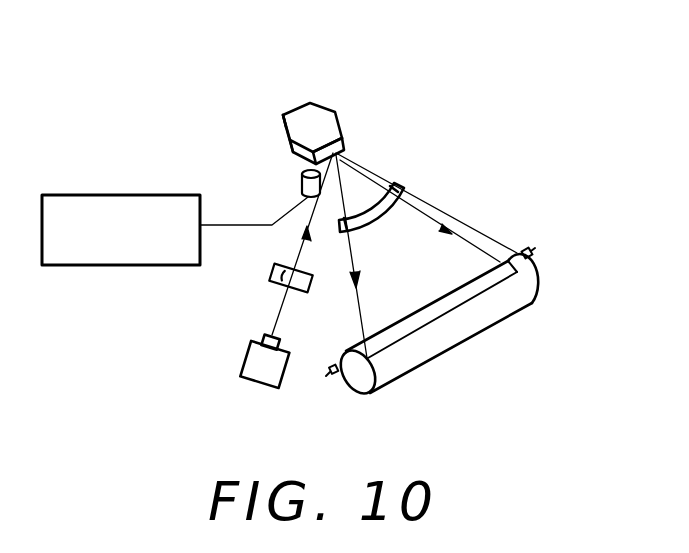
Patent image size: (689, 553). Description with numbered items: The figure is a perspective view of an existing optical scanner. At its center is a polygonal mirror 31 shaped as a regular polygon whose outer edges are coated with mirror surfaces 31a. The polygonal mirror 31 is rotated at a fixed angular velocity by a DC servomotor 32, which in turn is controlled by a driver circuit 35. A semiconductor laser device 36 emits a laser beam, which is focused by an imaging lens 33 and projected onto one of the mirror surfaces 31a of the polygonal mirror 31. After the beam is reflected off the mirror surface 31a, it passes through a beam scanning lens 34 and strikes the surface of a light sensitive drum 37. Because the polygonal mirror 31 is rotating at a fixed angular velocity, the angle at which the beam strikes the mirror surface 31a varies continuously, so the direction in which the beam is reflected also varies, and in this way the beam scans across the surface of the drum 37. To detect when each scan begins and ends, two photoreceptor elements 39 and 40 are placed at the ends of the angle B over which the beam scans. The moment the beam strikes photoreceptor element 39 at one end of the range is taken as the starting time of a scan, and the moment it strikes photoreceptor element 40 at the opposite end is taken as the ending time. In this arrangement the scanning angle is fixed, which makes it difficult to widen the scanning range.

The polygonal mirror 31 is at (317, 118).
The mirror surface 31a is at (283, 128).
The DC servomotor 32 is at (302, 186).
The imaging lens 33 is at (272, 271).
The beam scanning lens 34 is at (406, 186).
The driver circuit 35 is at (80, 265).
The semiconductor laser device 36 is at (252, 355).
The light sensitive drum 37 is at (513, 300).
The photoreceptor element 39 is at (332, 379).
The photoreceptor element 40 is at (533, 250).
The angle over which laser beam scans B is at (350, 166).